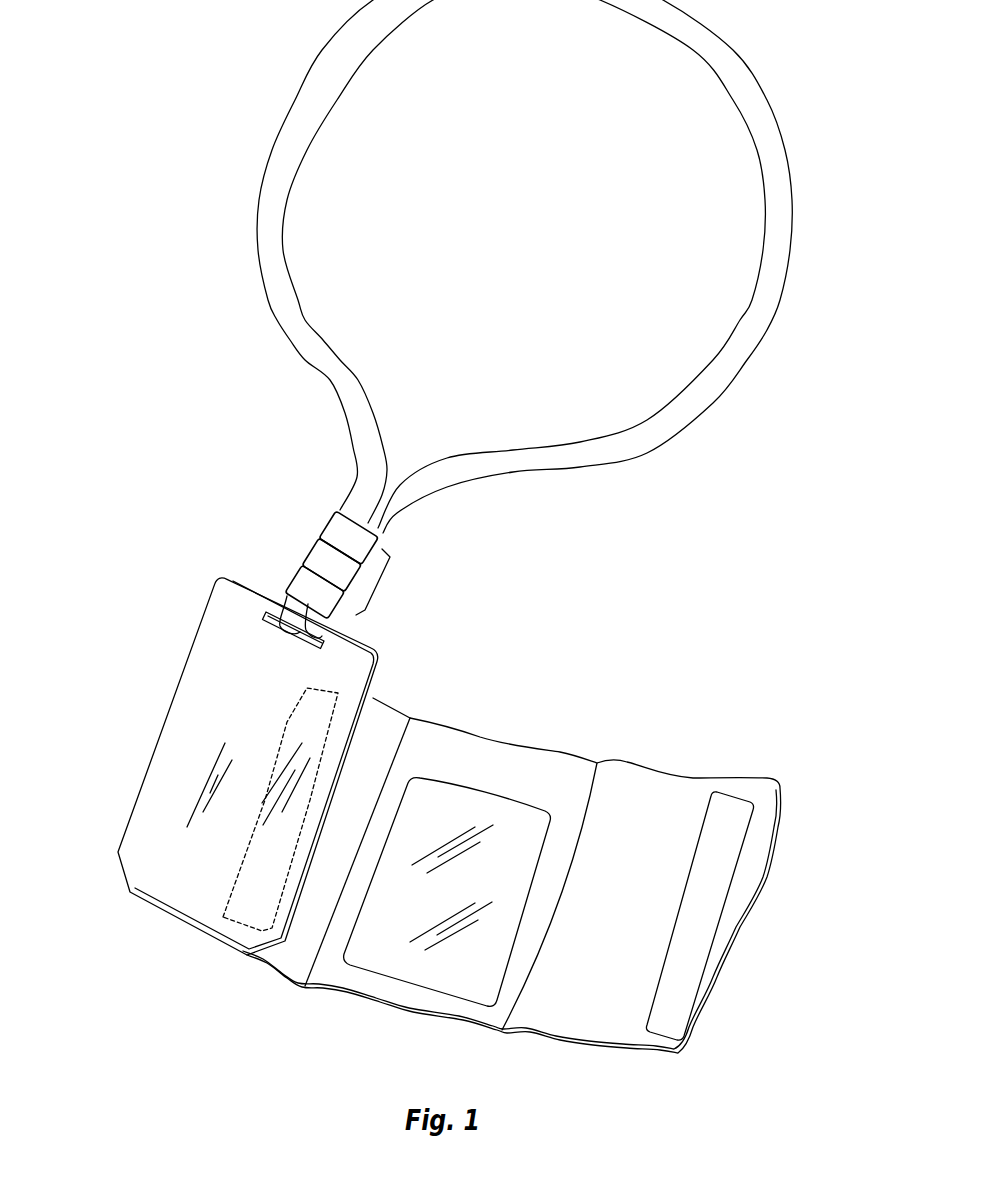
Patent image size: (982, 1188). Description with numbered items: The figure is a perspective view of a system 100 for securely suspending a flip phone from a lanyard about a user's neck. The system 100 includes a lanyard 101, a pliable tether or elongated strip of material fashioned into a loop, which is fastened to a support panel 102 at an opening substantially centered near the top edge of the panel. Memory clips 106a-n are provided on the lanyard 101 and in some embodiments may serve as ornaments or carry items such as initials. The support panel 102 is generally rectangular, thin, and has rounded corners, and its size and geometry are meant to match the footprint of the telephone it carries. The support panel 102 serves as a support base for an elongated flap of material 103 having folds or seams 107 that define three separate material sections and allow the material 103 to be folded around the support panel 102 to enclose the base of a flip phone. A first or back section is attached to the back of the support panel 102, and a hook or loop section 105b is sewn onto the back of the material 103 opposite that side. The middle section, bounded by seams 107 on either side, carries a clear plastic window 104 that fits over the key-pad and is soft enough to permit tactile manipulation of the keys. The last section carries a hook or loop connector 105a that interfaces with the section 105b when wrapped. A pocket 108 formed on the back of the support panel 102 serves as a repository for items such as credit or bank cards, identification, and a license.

The system 100 is at (150, 326).
The lanyard 101 is at (765, 213).
The support panel 102 is at (233, 766).
The elongated flap of material 103 is at (524, 865).
The clear plastic window 104 is at (525, 832).
The hook or loop connector 105a is at (697, 934).
The hook or loop section 105b is at (303, 742).
The memory clips 106a-n is at (376, 591).
The folds or seams 107 is at (313, 953).
The pocket 108 is at (260, 587).